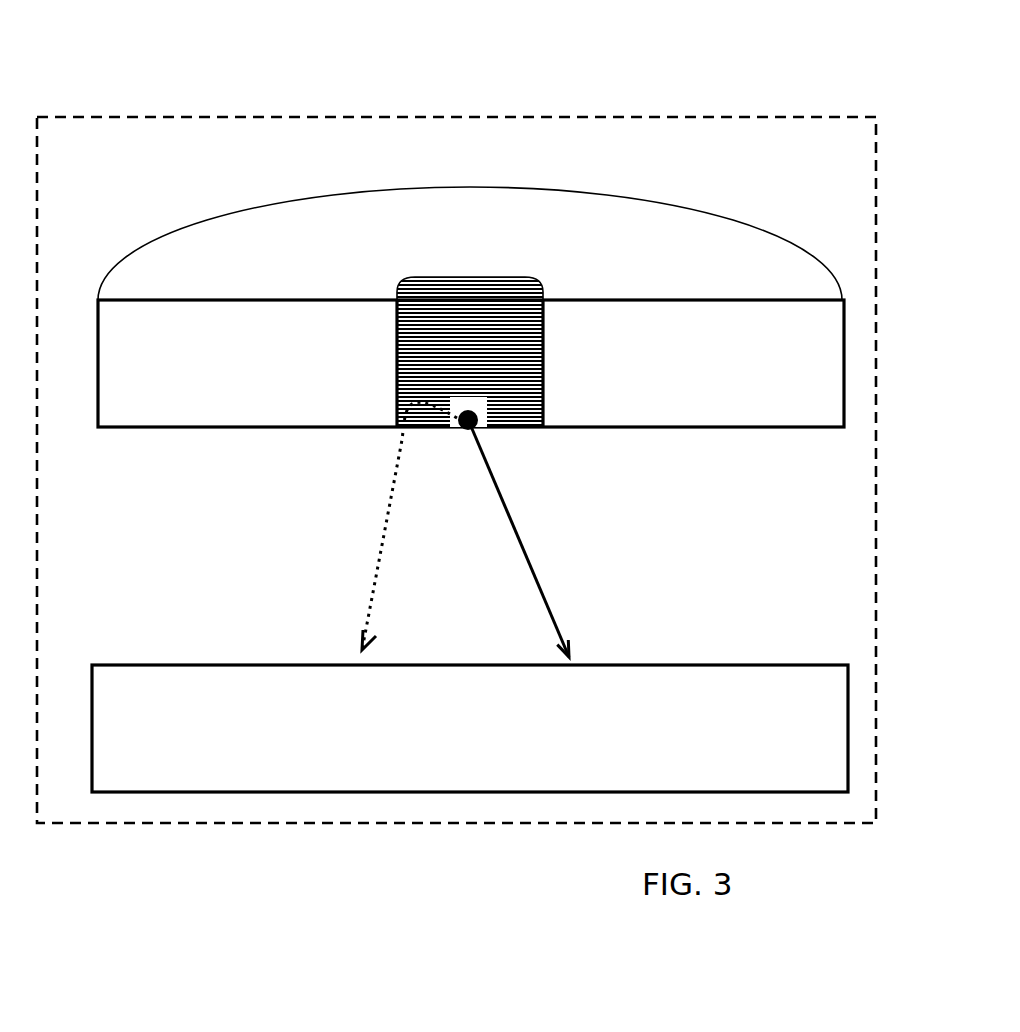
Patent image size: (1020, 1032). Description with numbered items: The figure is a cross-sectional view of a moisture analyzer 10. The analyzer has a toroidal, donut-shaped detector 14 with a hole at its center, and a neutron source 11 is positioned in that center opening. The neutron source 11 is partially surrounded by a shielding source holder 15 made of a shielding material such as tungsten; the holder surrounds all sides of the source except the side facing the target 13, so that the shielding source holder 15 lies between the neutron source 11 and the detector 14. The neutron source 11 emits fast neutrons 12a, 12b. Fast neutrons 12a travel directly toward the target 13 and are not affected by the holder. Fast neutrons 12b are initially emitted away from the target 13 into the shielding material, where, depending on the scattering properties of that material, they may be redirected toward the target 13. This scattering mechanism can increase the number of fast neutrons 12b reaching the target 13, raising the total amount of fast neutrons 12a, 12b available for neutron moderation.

The moisture analyzer 10 is at (808, 113).
The neutron source 11 is at (480, 430).
The fast neutrons 12a is at (527, 540).
The fast neutrons 12b is at (387, 526).
The target 13 is at (182, 745).
The detector 14 is at (263, 372).
The shielding source holder 15 is at (507, 357).